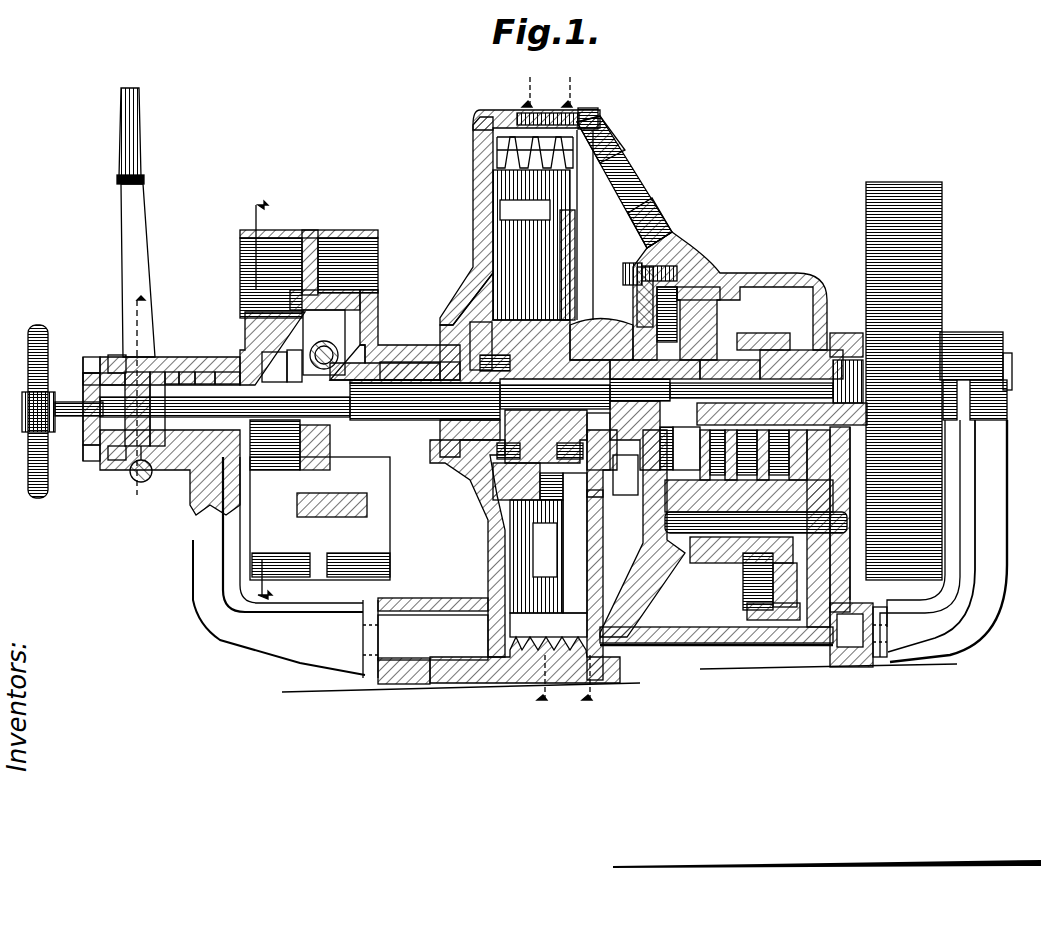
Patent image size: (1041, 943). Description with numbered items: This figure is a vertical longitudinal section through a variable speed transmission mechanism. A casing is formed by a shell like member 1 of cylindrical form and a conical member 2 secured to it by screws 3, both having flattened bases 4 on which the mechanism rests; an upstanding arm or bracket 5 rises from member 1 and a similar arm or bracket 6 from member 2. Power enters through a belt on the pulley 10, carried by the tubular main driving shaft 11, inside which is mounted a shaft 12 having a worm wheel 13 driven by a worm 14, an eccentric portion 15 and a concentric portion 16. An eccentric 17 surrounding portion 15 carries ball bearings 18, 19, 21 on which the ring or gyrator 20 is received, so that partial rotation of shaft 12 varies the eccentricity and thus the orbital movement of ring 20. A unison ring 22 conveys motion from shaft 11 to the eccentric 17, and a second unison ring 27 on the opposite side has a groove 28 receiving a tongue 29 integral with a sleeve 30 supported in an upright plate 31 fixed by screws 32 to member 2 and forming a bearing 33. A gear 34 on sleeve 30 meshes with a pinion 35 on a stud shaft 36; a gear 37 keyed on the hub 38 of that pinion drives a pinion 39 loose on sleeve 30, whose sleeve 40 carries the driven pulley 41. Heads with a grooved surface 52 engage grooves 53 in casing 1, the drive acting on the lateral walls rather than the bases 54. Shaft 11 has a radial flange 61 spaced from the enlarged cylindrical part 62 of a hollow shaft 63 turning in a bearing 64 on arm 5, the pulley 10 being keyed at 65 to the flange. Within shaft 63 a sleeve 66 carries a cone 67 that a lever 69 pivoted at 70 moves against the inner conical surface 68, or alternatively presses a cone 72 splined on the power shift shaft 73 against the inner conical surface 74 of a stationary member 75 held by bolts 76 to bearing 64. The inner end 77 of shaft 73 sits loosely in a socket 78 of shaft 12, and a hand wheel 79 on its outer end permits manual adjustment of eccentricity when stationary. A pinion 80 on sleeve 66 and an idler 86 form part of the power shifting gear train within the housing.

The shell like member 1 is at (473, 228).
The conical member 2 is at (606, 158).
The screws 3 is at (585, 110).
The flattened bases 4 is at (855, 660).
The upstanding arm or bracket 5 is at (210, 610).
The arm or bracket 6 is at (993, 478).
The pulley 10 is at (292, 232).
The main driving shaft 11 is at (415, 362).
The shaft 12 is at (418, 450).
The worm wheel 13 is at (305, 462).
The worm 14 is at (324, 341).
The eccentric portion 15 is at (470, 475).
The concentric portion 16 is at (732, 345).
The eccentric 17 is at (475, 490).
The ball bearings 18 is at (606, 496).
The ball bearings 19 is at (478, 500).
The ring or gyrator 20 is at (485, 500).
The ball bearings 21 is at (485, 520).
The unison ring 22 is at (479, 343).
The unison ring 27 is at (590, 320).
The groove 28 is at (623, 495).
The tongue 29 is at (600, 470).
The sleeve 30 is at (760, 290).
The upright plate 31 is at (670, 270).
The screws 32 is at (636, 266).
The bearing 33 is at (636, 300).
The gear 34 is at (715, 287).
The pinion 35 is at (690, 565).
The stud shaft 36 is at (665, 525).
The gear 37 is at (750, 610).
The hub 38 is at (752, 568).
The pinion 39 is at (778, 340).
The sleeve 40 is at (848, 340).
The pulley 41 is at (928, 305).
The grooved surface 52 is at (500, 160).
The grooves 53 is at (499, 148).
The bases of the grooves 54 is at (498, 150).
The radial flange 61 is at (380, 333).
The enlarged cylindrical part 62 is at (262, 345).
The sleeve or hollow shaft 63 is at (206, 370).
The bearing 64 is at (185, 465).
The key 65 is at (300, 517).
The sleeve 66 is at (187, 370).
The cone 67 is at (160, 370).
The inner conical surface 68 is at (172, 370).
The lever 69 is at (133, 203).
The pivot 70 is at (136, 482).
The cone 72 is at (128, 372).
The power shift shaft 73 is at (118, 462).
The inner conical surface 74 is at (98, 360).
The stationary member 75 is at (104, 470).
The bolts 76 is at (84, 362).
The inner end 77 is at (298, 366).
The socket 78 is at (372, 408).
The hand wheel 79 is at (33, 333).
The pinion 80 is at (228, 370).
The idler 86 is at (274, 368).